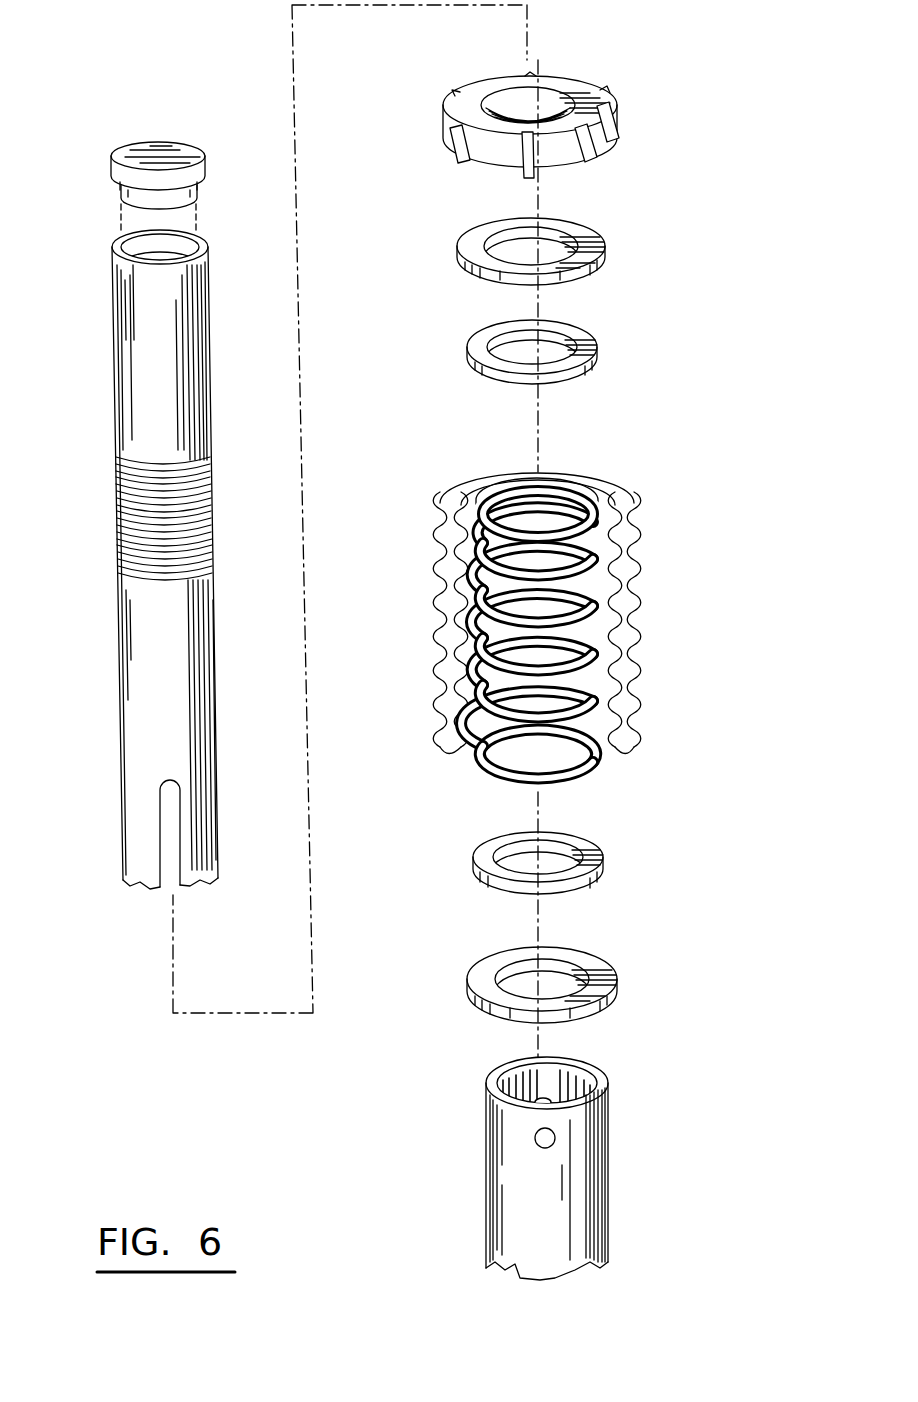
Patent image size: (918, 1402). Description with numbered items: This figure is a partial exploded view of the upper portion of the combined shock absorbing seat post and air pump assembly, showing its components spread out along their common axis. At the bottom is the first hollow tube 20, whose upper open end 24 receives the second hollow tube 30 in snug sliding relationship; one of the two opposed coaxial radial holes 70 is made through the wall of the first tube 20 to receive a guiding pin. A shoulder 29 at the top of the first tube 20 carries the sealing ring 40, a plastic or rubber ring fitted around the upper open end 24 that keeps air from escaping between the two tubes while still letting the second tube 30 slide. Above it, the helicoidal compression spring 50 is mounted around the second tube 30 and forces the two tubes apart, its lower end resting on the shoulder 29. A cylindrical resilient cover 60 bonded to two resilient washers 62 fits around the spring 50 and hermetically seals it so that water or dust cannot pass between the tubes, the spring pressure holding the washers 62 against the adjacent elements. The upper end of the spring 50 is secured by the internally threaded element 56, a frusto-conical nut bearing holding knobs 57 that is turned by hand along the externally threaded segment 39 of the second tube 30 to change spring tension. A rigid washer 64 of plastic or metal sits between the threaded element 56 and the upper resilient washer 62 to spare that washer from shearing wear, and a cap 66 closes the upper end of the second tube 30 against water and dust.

The first hollow tube 20 is at (543, 1146).
The upper open end 24 is at (543, 1078).
The shoulder 29 is at (603, 1068).
The second hollow tube 30 is at (119, 559).
The externally threaded segment 39 is at (117, 500).
The sealing ring 40 is at (619, 988).
The helicoidal compression spring 50 is at (603, 496).
The internally threaded element 56 is at (566, 128).
The holding knobs 57 is at (604, 110).
The cylindrical resilient cover 60 is at (634, 588).
The resilient washers 62 is at (600, 352).
The rigid washer 64 is at (608, 260).
The cap 66 is at (115, 166).
The radial holes 70 is at (535, 1137).